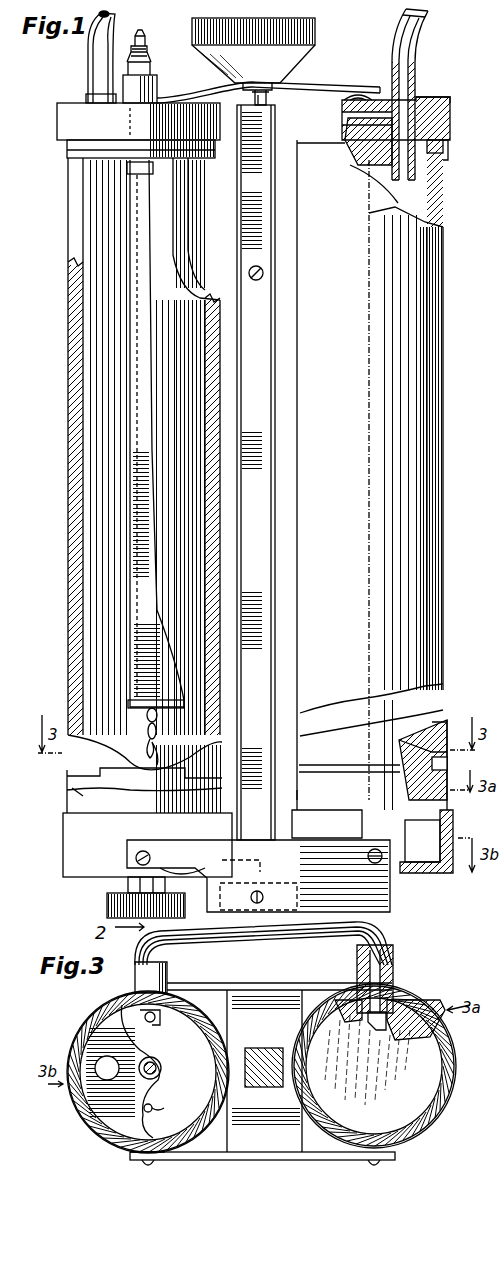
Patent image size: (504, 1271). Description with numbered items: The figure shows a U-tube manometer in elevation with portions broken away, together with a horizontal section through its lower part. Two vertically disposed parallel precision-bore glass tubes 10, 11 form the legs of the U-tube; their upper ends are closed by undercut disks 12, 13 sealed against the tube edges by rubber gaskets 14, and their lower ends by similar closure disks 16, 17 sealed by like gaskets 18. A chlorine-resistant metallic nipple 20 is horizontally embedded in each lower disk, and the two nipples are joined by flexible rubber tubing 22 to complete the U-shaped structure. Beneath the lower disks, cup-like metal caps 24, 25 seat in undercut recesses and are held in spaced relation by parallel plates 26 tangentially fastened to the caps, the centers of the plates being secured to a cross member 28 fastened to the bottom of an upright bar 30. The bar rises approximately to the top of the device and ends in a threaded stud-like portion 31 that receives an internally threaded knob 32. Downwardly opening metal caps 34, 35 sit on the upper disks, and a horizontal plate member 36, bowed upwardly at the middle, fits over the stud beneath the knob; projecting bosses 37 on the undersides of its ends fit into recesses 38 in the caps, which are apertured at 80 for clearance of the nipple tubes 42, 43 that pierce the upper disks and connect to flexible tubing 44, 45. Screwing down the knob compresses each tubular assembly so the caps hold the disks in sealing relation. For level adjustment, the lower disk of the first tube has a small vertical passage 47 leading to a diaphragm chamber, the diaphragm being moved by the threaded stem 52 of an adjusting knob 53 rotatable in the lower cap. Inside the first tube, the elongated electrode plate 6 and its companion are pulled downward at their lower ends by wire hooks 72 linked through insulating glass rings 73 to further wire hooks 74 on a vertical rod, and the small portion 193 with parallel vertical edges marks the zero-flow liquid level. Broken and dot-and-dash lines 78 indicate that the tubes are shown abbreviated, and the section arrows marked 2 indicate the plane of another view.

In FIG. 1, the valve stem / section line 2- 2 is at (121, 21).
In FIG. 1, the piston 6 is at (150, 612).
In FIG. 1, the glass tube 10 is at (68, 293).
In FIG. 3, the glass tube 10 is at (215, 1035).
In FIG. 1, the glass tube 11 is at (420, 250).
In FIG. 3, the glass tube 11 is at (450, 1080).
In FIG. 1, the upper closure disk 12 is at (67, 150).
In FIG. 1, the upper closure disk 13 is at (443, 147).
In FIG. 1, the gasket 14 is at (448, 158).
In FIG. 1, the lower closure disk 16 is at (67, 790).
In FIG. 1, the lower closure disk 17 is at (400, 748).
In FIG. 3, the lower closure disk 17 is at (438, 1030).
In FIG. 1, the gasket 18 is at (447, 764).
In FIG. 3, the metallic nipple 20 is at (388, 962).
In FIG. 3, the flexible rubber tubing 22 is at (365, 930).
In FIG. 1, the metal cap 24 is at (63, 830).
In FIG. 3, the metal cap 24 is at (75, 1037).
In FIG. 1, the metal cap 25 is at (445, 875).
In FIG. 1, the parallel plates 26 is at (390, 902).
In FIG. 3, the parallel plates 26 is at (210, 983).
In FIG. 1, the cross member 28 is at (290, 897).
In FIG. 3, the cross member 28 is at (250, 1152).
In FIG. 1, the upright bar 30 is at (256, 472).
In FIG. 3, the upright bar 30 is at (248, 1087).
In FIG. 1, the threaded stud-like portion 31 is at (270, 90).
In FIG. 1, the knob 32 is at (315, 18).
In FIG. 1, the metal cap 34 is at (57, 115).
In FIG. 1, the metal cap 35 is at (450, 115).
In FIG. 1, the horizontal plate member 36 is at (200, 90).
In FIG. 1, the projecting boss 37 is at (362, 95).
In FIG. 1, the recess 38 is at (348, 135).
In FIG. 1, the nipple tube 42 is at (86, 97).
In FIG. 1, the nipple tube 43 is at (418, 75).
In FIG. 1, the flexible tubing 44 is at (88, 45).
In FIG. 1, the flexible tubing 45 is at (425, 14).
In FIG. 3, the vertical passage 47 is at (158, 1106).
In FIG. 3, the threaded stem 52 is at (161, 1068).
In FIG. 1, the adjusting knob 53 is at (107, 902).
In FIG. 1, the wire hook 72 is at (147, 714).
In FIG. 1, the glass ring 73 is at (157, 731).
In FIG. 1, the wire hook 74 is at (147, 745).
In FIG. 1, the broken and dot-and-dash lines 78 is at (420, 686).
In FIG. 1, the aperture 80 is at (422, 99).
In FIG. 1, the small portion with parallel vertical edges 193 is at (190, 700).